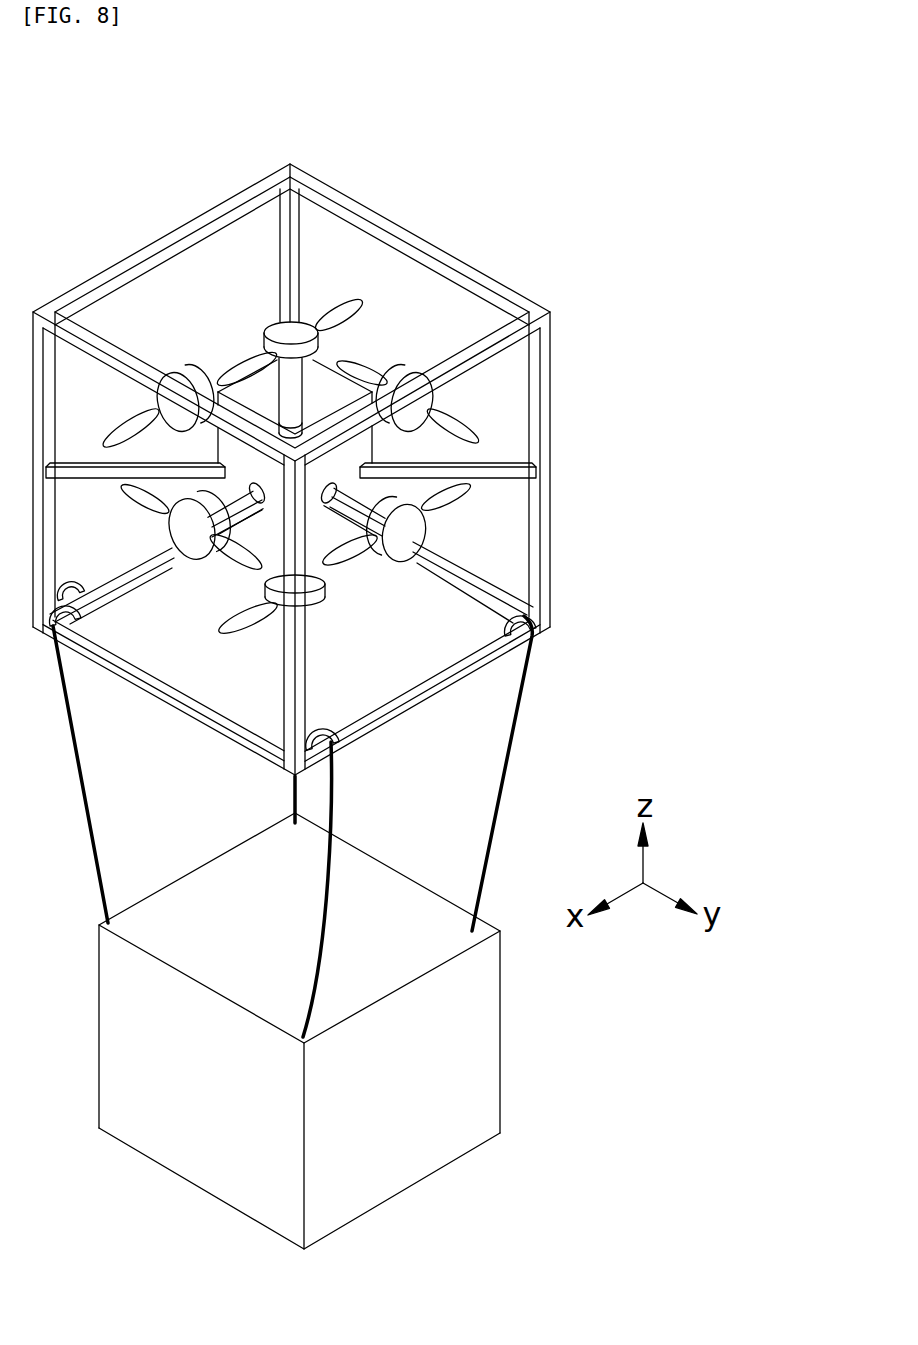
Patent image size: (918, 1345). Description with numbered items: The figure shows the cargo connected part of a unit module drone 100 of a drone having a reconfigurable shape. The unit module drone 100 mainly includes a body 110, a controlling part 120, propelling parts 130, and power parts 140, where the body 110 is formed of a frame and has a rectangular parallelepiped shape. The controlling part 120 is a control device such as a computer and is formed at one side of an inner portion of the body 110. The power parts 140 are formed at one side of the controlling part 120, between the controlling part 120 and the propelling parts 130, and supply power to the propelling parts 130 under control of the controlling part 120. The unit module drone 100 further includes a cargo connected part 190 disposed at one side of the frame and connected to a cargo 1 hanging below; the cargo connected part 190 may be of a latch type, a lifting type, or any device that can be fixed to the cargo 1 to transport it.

The unit module drone 100 is at (437, 178).
The body 110 is at (180, 233).
The controlling part 120 is at (317, 413).
The propelling parts 130 is at (274, 320).
The power parts 140 is at (420, 443).
The cargo connected part 190 is at (540, 609).
The cargo object 1 is at (489, 998).